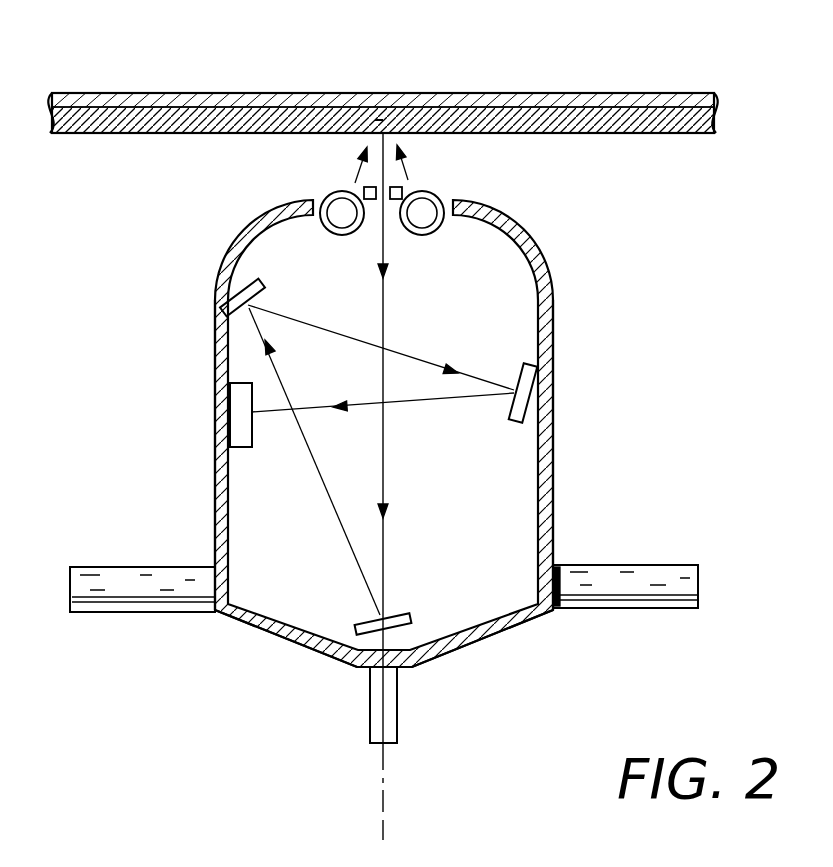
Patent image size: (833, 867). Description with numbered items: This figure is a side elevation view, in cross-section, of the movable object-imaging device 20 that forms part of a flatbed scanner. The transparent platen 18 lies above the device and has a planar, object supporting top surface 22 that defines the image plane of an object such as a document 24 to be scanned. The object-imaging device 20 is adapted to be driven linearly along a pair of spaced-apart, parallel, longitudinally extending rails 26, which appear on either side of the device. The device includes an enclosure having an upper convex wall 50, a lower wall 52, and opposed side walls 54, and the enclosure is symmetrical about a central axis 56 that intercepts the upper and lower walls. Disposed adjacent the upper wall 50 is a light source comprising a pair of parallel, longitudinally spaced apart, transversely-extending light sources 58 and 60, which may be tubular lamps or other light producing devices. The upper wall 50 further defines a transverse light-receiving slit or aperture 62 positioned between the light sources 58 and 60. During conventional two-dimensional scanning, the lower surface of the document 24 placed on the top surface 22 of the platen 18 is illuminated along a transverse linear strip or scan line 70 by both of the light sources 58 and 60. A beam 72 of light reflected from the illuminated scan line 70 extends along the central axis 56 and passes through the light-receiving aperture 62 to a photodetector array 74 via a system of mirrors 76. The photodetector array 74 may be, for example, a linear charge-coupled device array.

The transparent platen 18 is at (720, 112).
The object-imaging device 20 is at (616, 303).
The top surface 22 is at (493, 107).
The document 24 is at (610, 93).
The rails 26 is at (665, 565).
The upper convex wall 50 is at (527, 240).
The lower wall 52 is at (478, 643).
The side walls 54 is at (215, 465).
The central axis 56 is at (384, 815).
The light source 58 is at (325, 195).
The light source 60 is at (437, 198).
The light-receiving aperture 62 is at (373, 215).
The scan line 70 is at (378, 120).
The beam 72 is at (388, 309).
The photodetector array 74 is at (255, 440).
The mirrors 76 is at (263, 298).